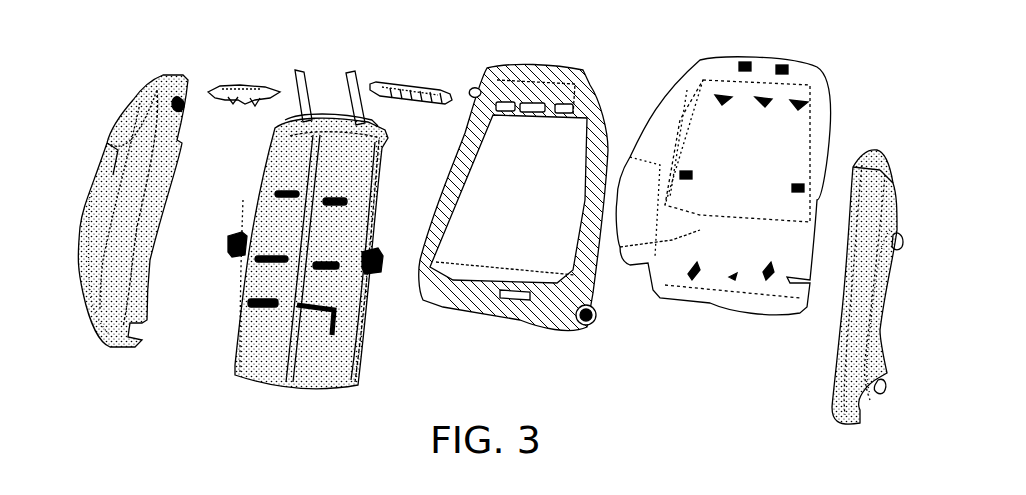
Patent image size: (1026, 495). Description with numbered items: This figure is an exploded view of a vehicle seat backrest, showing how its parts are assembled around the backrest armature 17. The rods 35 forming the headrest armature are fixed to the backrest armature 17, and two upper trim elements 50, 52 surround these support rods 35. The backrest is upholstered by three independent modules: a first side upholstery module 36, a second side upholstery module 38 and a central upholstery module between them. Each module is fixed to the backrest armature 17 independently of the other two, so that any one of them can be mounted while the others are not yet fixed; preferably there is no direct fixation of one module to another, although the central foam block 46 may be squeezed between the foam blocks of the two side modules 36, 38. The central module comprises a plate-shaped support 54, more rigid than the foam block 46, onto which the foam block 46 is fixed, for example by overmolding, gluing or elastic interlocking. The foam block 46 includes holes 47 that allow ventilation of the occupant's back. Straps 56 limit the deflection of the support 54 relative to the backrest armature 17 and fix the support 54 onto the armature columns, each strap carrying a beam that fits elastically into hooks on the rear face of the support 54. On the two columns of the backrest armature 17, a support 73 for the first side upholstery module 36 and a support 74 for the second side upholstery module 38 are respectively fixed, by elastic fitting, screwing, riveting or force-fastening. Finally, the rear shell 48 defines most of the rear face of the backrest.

The backrest armature 17 is at (552, 72).
The headrest armature rods 35 is at (352, 72).
The first side upholstery module 36 is at (130, 92).
The second side upholstery module 38 is at (880, 147).
The foam block 46 is at (316, 380).
The holes 47 is at (250, 312).
The rear shell 48 is at (728, 300).
The upper trim element 50 is at (250, 88).
The upper trim element 52 is at (400, 84).
The support 54 is at (372, 190).
The straps 56 is at (228, 238).
The support 73 is at (185, 110).
The support 74 is at (903, 250).